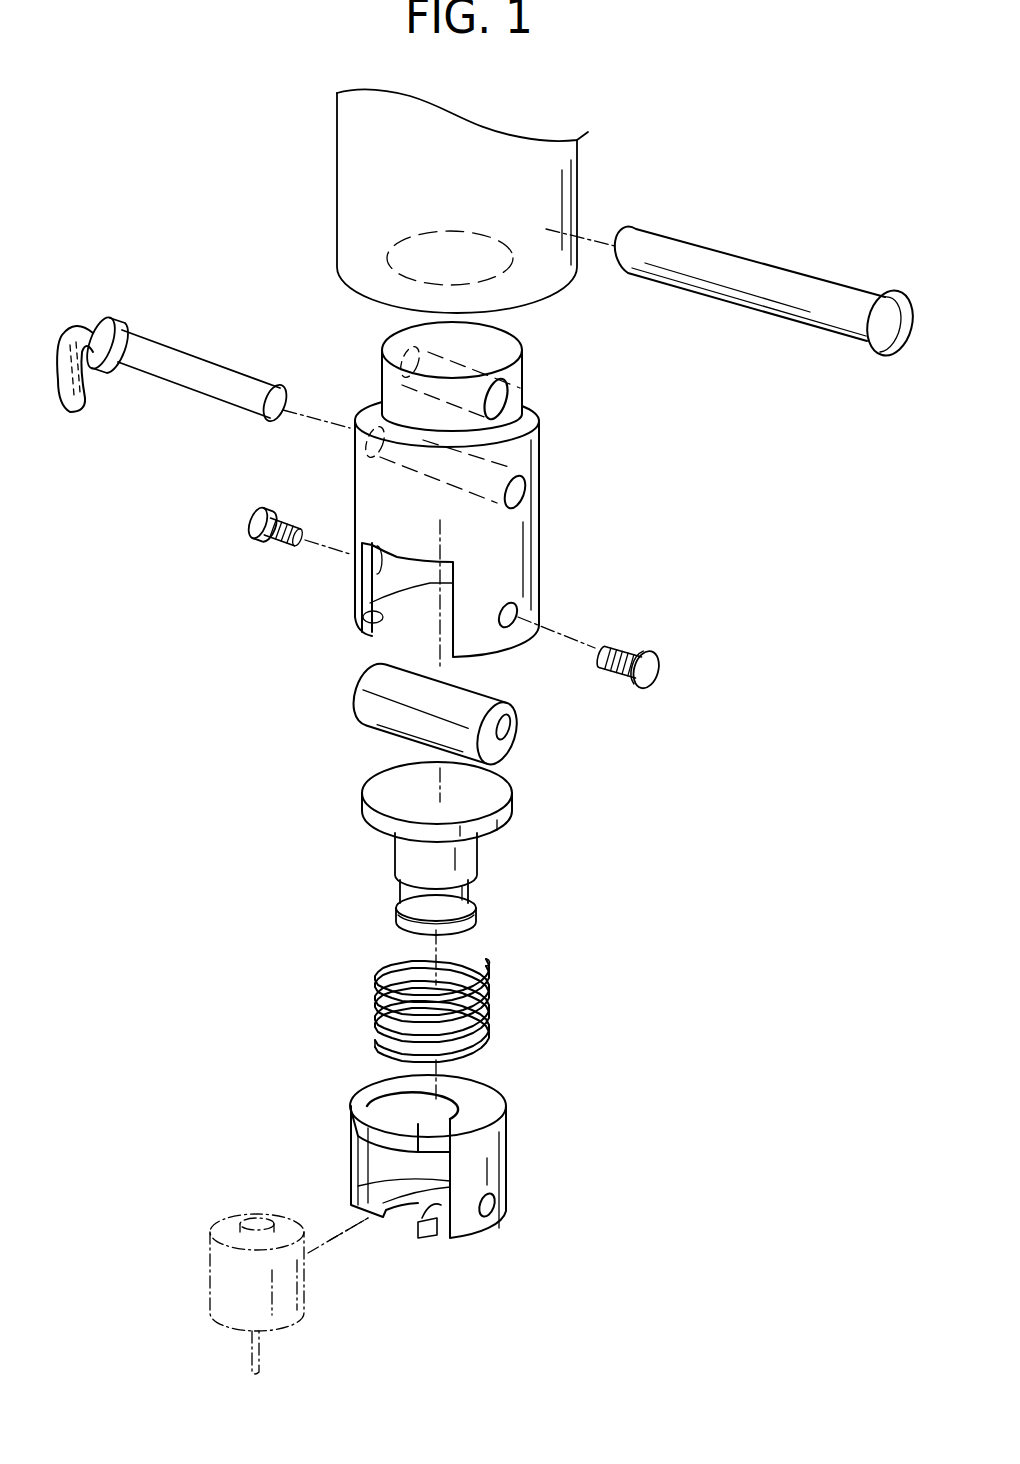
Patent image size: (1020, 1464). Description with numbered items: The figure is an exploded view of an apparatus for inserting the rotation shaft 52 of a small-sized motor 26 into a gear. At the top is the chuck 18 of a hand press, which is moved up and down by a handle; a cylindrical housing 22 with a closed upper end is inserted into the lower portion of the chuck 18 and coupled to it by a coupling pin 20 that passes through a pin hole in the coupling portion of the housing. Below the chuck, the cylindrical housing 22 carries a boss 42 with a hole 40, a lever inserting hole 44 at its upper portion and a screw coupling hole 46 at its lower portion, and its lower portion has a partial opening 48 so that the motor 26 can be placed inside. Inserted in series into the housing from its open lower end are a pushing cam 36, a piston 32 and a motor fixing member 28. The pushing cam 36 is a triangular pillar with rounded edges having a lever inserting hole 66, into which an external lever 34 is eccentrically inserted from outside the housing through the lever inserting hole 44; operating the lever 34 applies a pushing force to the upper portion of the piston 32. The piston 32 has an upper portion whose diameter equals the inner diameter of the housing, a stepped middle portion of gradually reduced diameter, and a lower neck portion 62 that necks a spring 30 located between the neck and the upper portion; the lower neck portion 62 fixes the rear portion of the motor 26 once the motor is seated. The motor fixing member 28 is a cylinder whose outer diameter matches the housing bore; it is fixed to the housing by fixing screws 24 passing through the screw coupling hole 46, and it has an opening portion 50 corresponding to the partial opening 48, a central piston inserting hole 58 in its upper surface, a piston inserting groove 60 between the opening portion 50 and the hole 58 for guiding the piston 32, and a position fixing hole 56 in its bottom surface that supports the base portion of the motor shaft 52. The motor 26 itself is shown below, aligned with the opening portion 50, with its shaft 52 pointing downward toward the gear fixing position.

The chuck 18 is at (355, 158).
The coupling pin 20 is at (738, 262).
The cylindrical housing 22 is at (439, 557).
The fixing screws 24 is at (637, 652).
The small-sized motor 26 is at (225, 1296).
The motor fixing member 28 is at (428, 1185).
The spring 30 is at (373, 990).
The piston 32 is at (497, 873).
The lever 34 is at (165, 378).
The pushing cam 36 is at (432, 712).
The hole 40 is at (517, 388).
The boss 42 is at (382, 366).
The lever inserting hole 44 is at (522, 490).
The screw coupling hole 46 is at (520, 610).
The partial opening 48 is at (360, 617).
The opening portion 50 is at (367, 1168).
The rotation shaft 52 is at (252, 1358).
The position fixing hole 56 is at (428, 1242).
The piston inserting hole 58 is at (418, 1102).
The piston inserting groove 60 is at (387, 1130).
The lower neck portion 62 is at (478, 918).
The lever inserting hole 66 is at (515, 733).